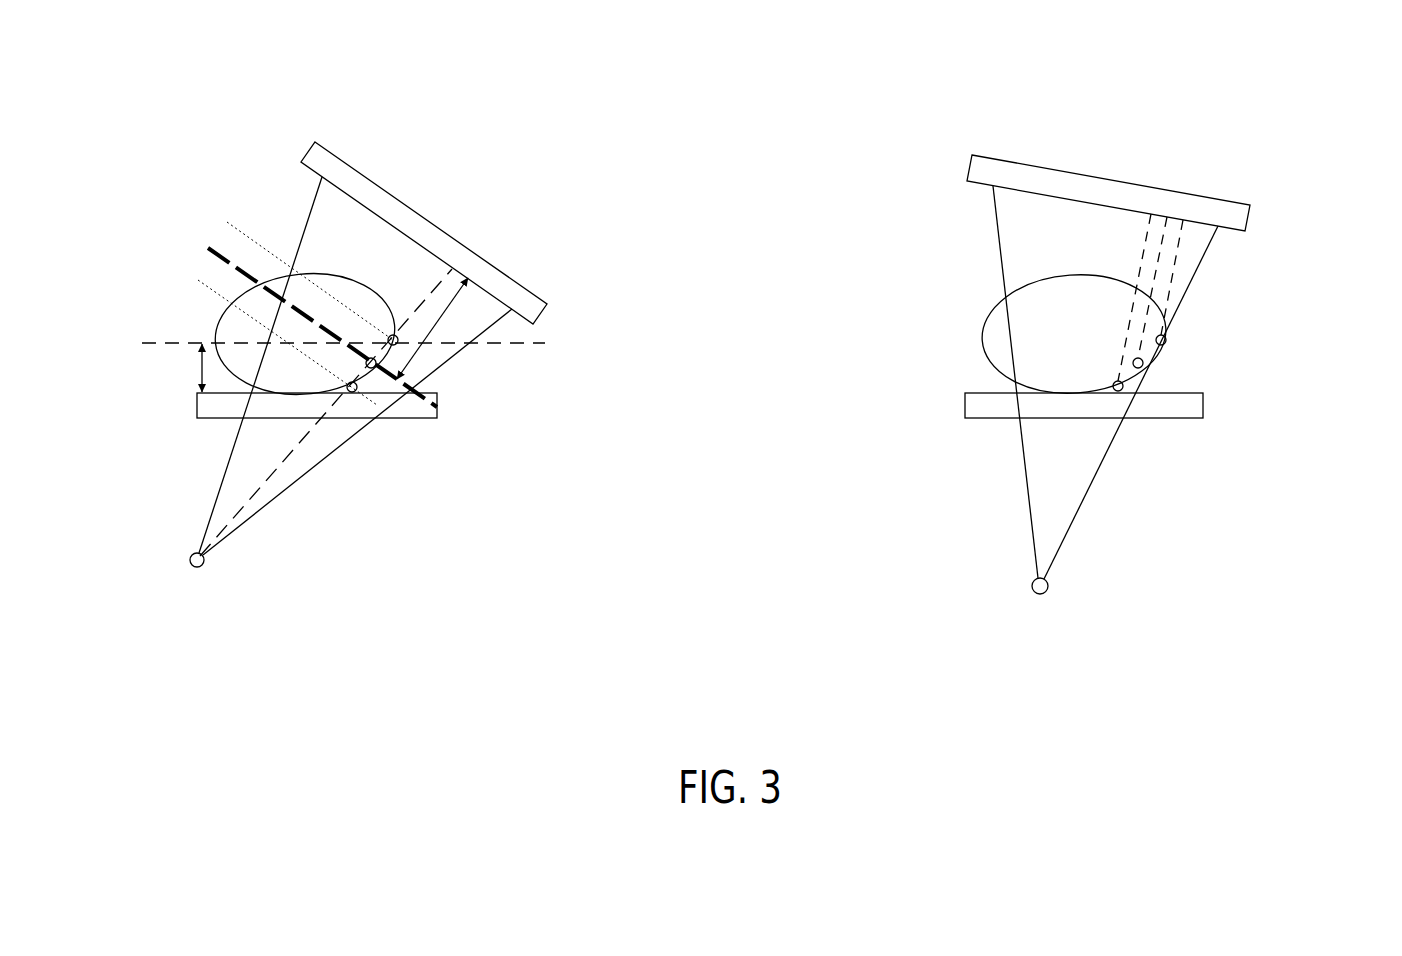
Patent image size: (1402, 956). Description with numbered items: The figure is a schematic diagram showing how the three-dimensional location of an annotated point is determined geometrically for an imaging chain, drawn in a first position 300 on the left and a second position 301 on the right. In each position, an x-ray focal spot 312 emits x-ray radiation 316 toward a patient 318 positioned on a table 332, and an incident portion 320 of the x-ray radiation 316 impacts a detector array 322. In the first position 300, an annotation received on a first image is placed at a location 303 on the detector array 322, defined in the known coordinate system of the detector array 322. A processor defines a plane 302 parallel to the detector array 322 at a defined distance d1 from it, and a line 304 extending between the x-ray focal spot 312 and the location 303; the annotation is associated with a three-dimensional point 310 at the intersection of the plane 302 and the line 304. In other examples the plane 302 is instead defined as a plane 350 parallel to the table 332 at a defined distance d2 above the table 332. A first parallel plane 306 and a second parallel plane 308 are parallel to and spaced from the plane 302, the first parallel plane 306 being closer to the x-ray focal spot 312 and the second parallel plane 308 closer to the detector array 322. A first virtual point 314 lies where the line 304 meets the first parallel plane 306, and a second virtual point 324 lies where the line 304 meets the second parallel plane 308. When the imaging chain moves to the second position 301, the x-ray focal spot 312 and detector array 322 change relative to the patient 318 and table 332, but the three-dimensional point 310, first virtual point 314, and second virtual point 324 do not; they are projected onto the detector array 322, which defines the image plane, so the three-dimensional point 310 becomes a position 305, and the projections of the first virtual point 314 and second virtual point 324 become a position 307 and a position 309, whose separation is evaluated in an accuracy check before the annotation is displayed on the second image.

The first position 300 is at (567, 96).
The second position 301 is at (1335, 96).
The plane 302 is at (210, 262).
The location 303 is at (447, 269).
The line 304 is at (263, 483).
The position 305 is at (1163, 208).
The first parallel plane 306 is at (202, 286).
The position 307 is at (1147, 217).
The second parallel plane 308 is at (237, 228).
The position 309 is at (1187, 224).
The 3D point 310 is at (371, 358).
The x-ray focal spot 312 is at (203, 568).
The first virtual point 314 is at (347, 386).
The x-ray radiation 316 is at (333, 437).
The patient 318 is at (218, 325).
The incident portion 320 is at (323, 202).
The detector array 322 is at (503, 272).
The second virtual point 324 is at (393, 335).
The table 332 is at (412, 419).
The plane 350 is at (548, 343).
The defined distance d1 is at (432, 328).
The defined distance d2 is at (202, 368).